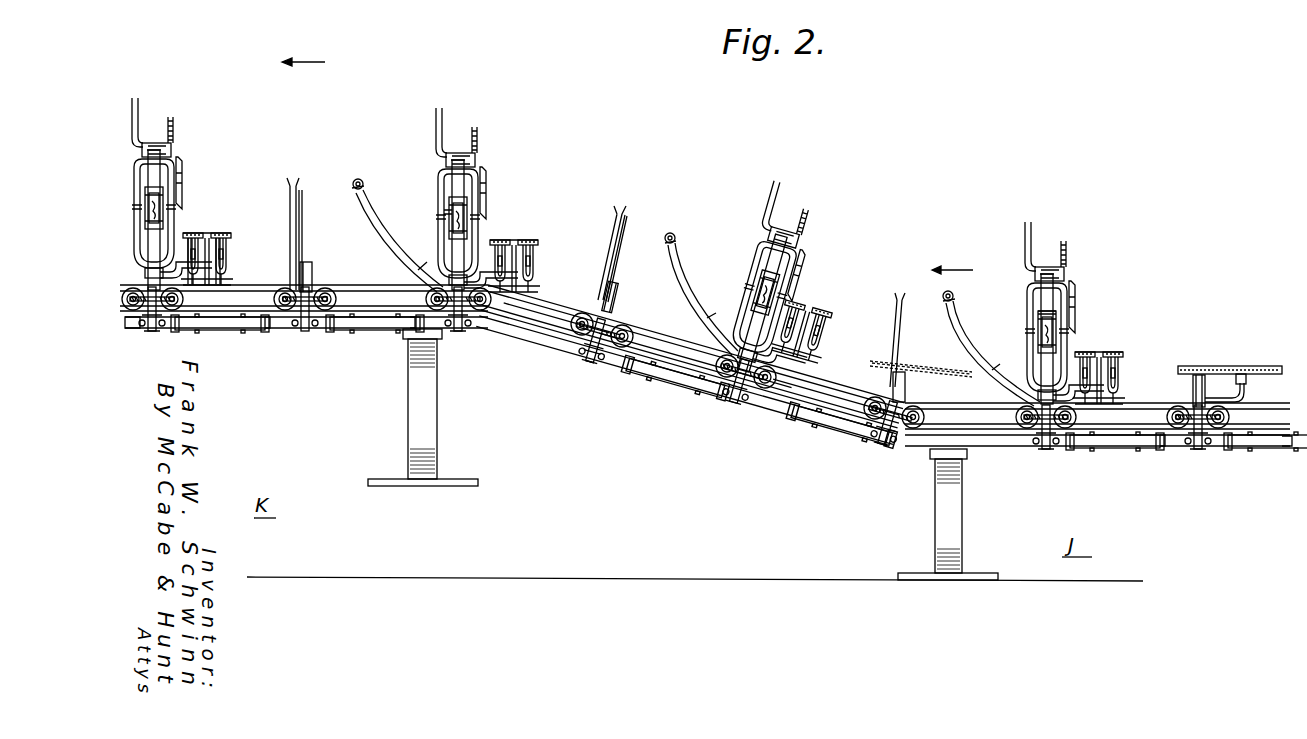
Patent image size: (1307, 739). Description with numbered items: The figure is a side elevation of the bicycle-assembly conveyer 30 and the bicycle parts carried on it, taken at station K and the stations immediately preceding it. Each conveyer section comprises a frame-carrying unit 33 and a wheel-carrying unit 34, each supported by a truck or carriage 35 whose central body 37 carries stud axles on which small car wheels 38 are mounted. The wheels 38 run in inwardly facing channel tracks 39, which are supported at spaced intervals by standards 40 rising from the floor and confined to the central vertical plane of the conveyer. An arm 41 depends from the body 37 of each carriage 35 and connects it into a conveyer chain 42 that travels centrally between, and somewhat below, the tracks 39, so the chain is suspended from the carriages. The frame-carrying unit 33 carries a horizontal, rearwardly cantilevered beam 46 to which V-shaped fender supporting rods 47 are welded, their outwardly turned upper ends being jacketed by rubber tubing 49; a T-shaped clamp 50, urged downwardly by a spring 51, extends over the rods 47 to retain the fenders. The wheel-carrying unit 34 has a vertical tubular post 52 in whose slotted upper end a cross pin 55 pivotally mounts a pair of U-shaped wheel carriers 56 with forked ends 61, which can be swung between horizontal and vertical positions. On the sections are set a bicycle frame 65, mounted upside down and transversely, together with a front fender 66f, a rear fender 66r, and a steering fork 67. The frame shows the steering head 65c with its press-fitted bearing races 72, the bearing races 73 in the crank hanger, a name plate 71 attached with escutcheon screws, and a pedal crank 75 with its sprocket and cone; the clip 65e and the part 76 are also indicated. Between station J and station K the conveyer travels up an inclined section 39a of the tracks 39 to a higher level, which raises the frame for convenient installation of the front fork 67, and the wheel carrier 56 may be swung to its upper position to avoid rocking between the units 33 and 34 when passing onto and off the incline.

The track rail 30 is at (530, 345).
The frame-carrying unit 33 is at (738, 309).
The wheel-carrying unit 34 is at (320, 277).
The truck or carriage 35 is at (640, 326).
The central body 37 is at (326, 291).
The car wheel 38 is at (279, 289).
The channel track 39 is at (551, 292).
The inclined section 39a is at (848, 378).
The standard 40 is at (438, 470).
The depending arm 41 is at (532, 362).
The conveyer chain 42 is at (635, 372).
The beam 46 is at (214, 271).
The fender supporting rod 47 is at (526, 244).
The rubber tubing 49 is at (1122, 368).
The T-shaped clamp 50 is at (210, 262).
The spring 51 is at (1122, 384).
The tubular post 52 is at (622, 296).
The cross pin 55 is at (618, 288).
The wheel carrier 56 is at (302, 236).
The forked end 61 is at (296, 184).
The bicycle frame 65 is at (162, 189).
The steering head 65c is at (160, 148).
The guard clip 65e is at (446, 208).
The rear fender 66r is at (226, 236).
The front fender 66f is at (198, 238).
The steering fork 67 is at (398, 232).
The name plate 71 is at (470, 206).
The bearing race 72 is at (1068, 322).
The bearing race 73 is at (775, 226).
The pedal crank 75 is at (436, 123).
The supporting rod 76 is at (478, 136).